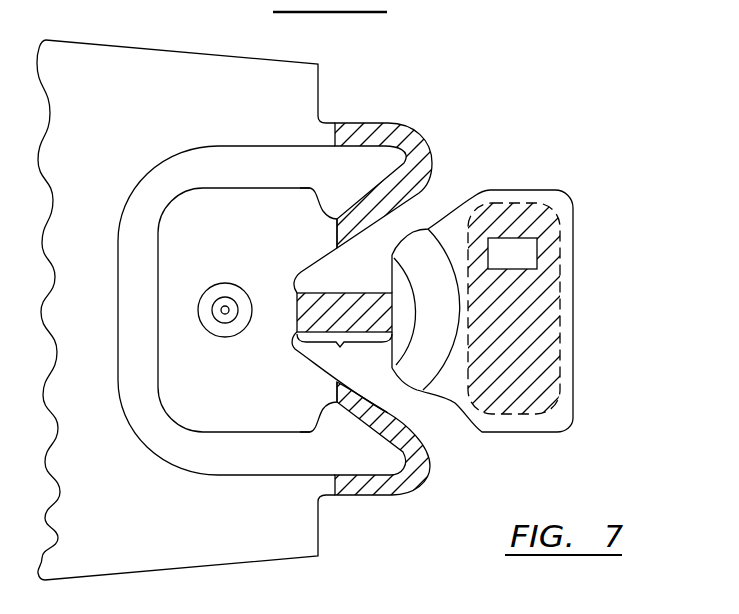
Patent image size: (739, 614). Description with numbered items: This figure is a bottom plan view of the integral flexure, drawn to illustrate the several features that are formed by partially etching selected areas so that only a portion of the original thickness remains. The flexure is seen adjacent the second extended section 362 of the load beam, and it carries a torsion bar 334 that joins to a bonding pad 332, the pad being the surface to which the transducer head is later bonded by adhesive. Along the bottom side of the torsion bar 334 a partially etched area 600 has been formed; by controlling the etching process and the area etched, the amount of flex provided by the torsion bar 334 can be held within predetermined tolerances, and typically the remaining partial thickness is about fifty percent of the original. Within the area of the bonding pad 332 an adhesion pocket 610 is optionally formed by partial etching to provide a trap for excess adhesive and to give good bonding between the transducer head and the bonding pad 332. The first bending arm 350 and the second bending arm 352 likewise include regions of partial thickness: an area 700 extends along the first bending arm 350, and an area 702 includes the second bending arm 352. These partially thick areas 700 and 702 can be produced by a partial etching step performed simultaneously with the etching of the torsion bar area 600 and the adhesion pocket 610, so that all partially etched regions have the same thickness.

The second extended section 362 is at (125, 72).
The second bending arm 352 is at (396, 123).
The first bending arm 350 is at (382, 496).
The torsion bar 334 is at (319, 293).
The bonding pad 332 is at (530, 203).
The adhesion pocket 610 is at (512, 254).
The partially etched area 600 is at (344, 354).
The partially etched area 702 is at (350, 140).
The partially etched area 700 is at (352, 412).